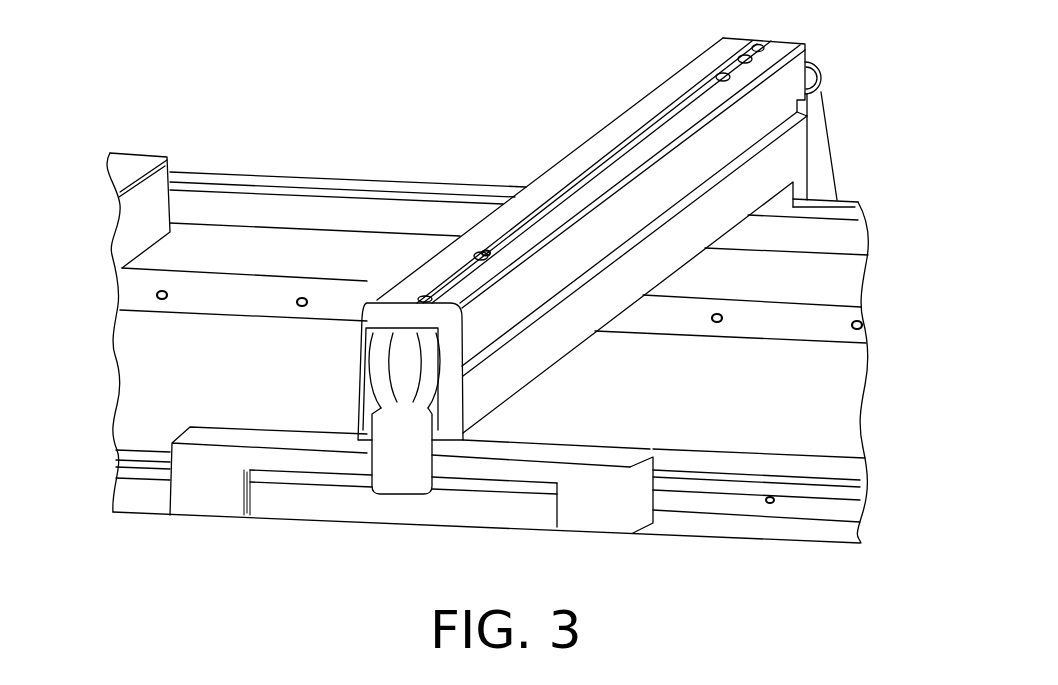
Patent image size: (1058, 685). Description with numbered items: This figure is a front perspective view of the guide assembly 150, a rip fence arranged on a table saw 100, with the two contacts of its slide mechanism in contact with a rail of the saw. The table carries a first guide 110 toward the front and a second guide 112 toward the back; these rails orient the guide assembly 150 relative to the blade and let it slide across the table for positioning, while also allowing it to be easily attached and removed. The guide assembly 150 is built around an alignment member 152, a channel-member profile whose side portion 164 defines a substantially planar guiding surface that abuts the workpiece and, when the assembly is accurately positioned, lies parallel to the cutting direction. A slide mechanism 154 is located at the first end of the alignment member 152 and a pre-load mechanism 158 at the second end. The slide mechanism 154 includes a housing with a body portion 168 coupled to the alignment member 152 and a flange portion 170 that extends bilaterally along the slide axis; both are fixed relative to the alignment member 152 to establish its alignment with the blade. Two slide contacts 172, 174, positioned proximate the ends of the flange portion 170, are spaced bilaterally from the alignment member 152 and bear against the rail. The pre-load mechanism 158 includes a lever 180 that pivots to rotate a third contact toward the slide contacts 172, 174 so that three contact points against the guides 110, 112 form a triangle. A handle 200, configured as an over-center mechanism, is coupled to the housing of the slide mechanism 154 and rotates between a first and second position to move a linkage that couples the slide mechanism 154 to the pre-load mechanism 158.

The table saw 100 is at (148, 55).
The first guide 110 is at (865, 520).
The second guide 112 is at (860, 212).
The guide assembly 150 is at (543, 98).
The alignment member 152 is at (643, 95).
The slide mechanism 154 is at (318, 392).
The pre-load mechanism 158 is at (838, 95).
The side portion 164 is at (555, 335).
The body portion 168 is at (363, 330).
The flange portion 170 is at (185, 436).
The slide contact 172 is at (250, 512).
The slide contact 174 is at (640, 527).
The lever 180 is at (838, 160).
The handle 200 is at (383, 495).